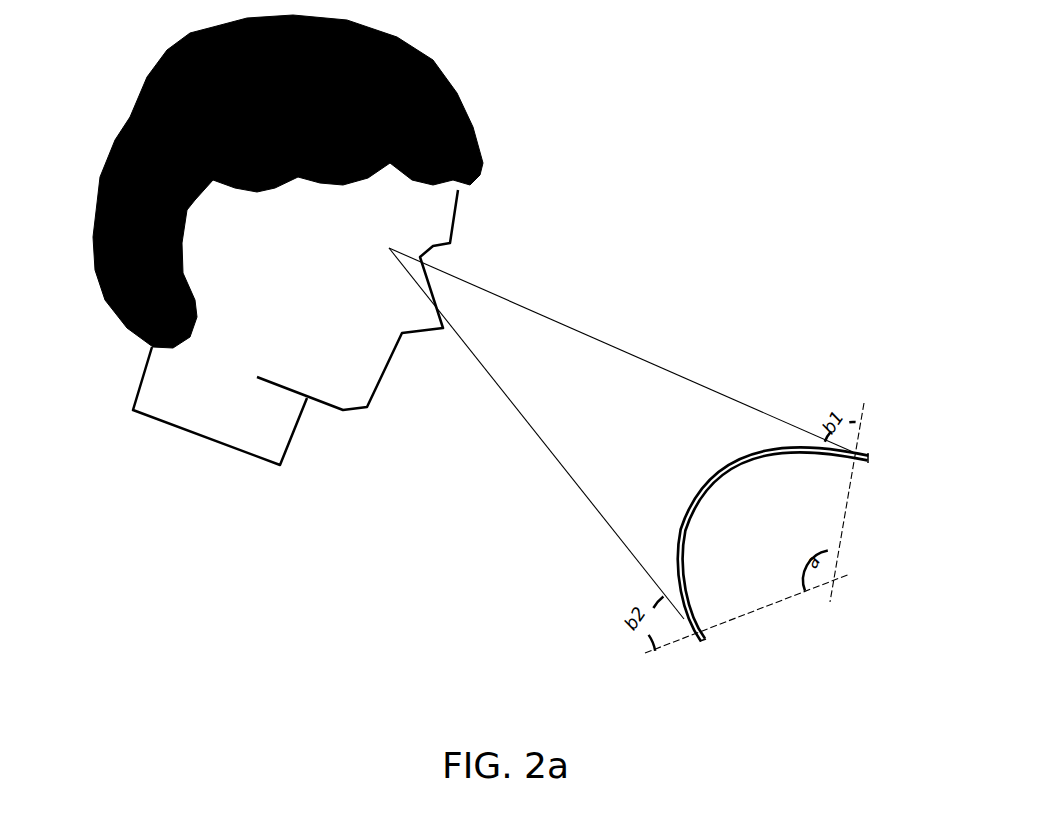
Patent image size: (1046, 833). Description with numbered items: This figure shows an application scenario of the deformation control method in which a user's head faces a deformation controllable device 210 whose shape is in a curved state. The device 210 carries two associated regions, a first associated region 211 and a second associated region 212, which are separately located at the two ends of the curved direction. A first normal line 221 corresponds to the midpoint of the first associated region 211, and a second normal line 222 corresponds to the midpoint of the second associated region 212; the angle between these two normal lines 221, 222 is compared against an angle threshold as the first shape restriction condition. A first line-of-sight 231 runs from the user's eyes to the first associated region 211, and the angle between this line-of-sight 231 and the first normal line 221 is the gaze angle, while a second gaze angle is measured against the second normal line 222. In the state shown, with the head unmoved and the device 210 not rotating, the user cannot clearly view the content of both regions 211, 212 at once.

The deformation controllable device 210 is at (658, 455).
The first associated region 211 is at (847, 462).
The second associated region 212 is at (702, 634).
The first normal line 221 is at (855, 420).
The second normal line 222 is at (510, 398).
The first line-of-sight 231 is at (503, 295).